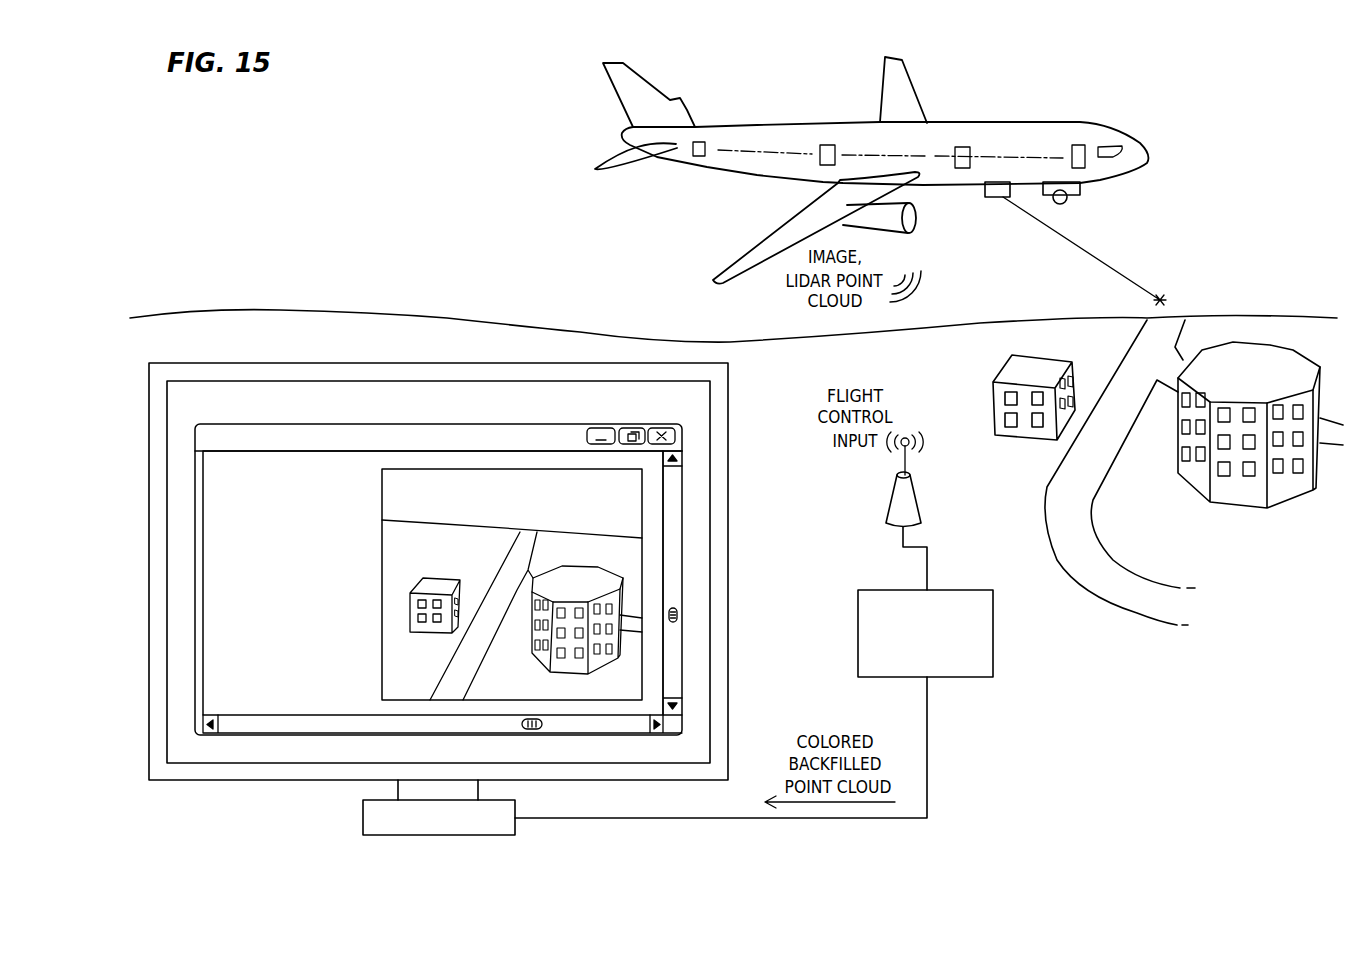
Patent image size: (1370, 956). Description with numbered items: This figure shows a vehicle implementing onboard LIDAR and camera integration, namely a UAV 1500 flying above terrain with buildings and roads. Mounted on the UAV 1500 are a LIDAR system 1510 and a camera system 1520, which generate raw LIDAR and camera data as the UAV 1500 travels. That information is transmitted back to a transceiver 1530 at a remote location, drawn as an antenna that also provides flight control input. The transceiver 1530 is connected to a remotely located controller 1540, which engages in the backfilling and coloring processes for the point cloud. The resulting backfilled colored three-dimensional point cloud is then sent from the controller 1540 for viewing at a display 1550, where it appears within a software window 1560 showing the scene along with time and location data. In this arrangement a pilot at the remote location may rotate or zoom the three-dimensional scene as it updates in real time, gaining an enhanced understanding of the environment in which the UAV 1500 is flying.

The UAV 1500 is at (690, 170).
The LIDAR system 1510 is at (985, 197).
The camera system 1520 is at (1080, 190).
The transceiver 1530 is at (887, 497).
The controller 1540 is at (925, 633).
The display 1550 is at (473, 599).
The software window 1560 is at (495, 423).